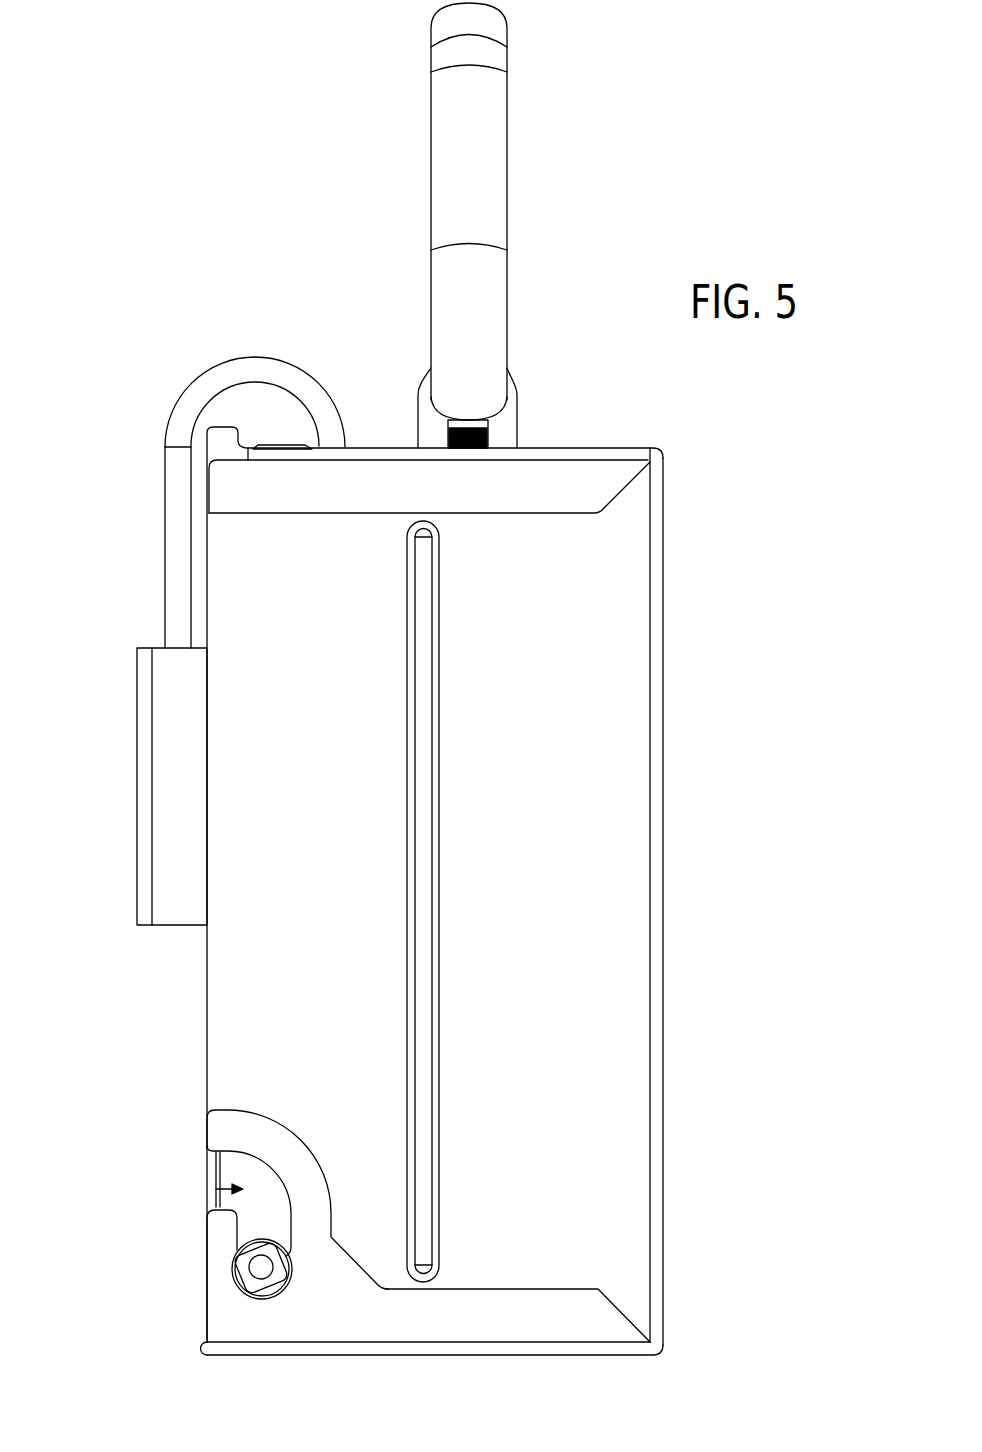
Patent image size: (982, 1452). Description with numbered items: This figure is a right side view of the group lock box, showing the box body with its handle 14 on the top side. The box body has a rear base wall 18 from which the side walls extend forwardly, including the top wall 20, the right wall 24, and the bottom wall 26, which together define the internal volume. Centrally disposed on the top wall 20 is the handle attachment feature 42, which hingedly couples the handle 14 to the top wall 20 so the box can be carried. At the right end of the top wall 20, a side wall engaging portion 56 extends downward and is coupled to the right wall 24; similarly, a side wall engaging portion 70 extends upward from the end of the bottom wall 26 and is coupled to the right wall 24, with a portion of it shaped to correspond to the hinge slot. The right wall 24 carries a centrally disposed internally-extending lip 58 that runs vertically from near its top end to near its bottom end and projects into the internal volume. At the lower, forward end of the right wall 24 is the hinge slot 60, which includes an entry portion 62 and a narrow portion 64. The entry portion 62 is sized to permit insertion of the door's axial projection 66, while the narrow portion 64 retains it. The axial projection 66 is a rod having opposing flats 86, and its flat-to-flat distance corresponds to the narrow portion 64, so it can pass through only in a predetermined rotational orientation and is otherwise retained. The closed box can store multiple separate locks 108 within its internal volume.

The handle 14 is at (490, 150).
The base wall 18 is at (663, 686).
The top wall 20 is at (538, 448).
The right wall 24 is at (625, 917).
The bottom wall 26 is at (625, 1355).
The handle attachment feature 42 is at (423, 418).
The side wall engaging portion 56 is at (605, 472).
The internally-extending lip 58 is at (420, 703).
The hinge slot 60 is at (216, 1189).
The entry portion 62 is at (275, 1168).
The narrow portion 64 is at (237, 1238).
The axial projection 66 is at (258, 1277).
The side wall engaging portion 70 is at (598, 1315).
The flat 86 is at (292, 1278).
The lock 108 is at (165, 800).